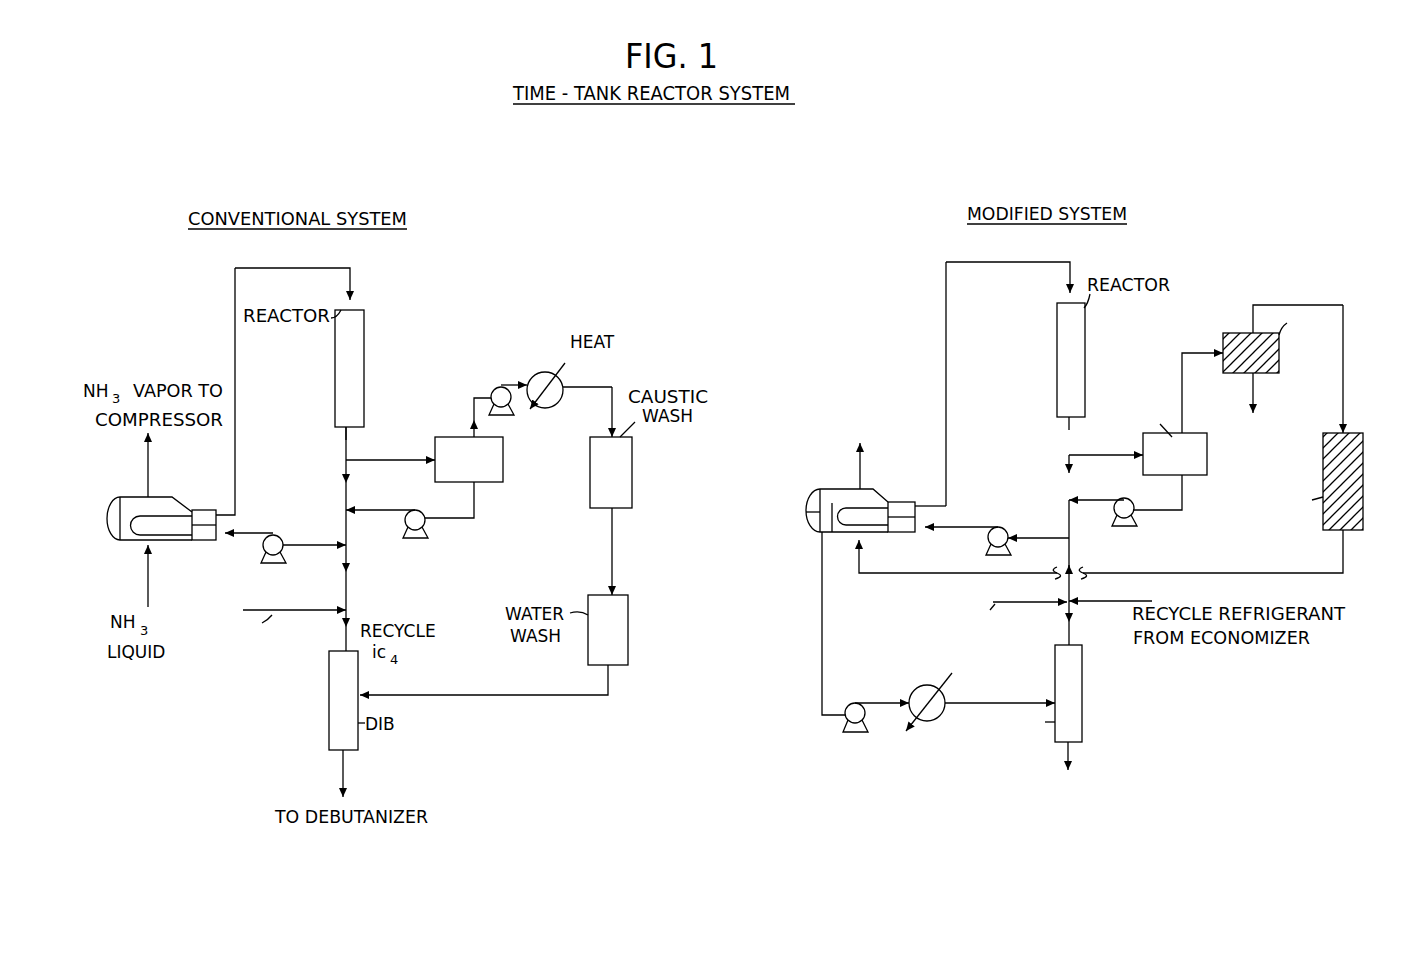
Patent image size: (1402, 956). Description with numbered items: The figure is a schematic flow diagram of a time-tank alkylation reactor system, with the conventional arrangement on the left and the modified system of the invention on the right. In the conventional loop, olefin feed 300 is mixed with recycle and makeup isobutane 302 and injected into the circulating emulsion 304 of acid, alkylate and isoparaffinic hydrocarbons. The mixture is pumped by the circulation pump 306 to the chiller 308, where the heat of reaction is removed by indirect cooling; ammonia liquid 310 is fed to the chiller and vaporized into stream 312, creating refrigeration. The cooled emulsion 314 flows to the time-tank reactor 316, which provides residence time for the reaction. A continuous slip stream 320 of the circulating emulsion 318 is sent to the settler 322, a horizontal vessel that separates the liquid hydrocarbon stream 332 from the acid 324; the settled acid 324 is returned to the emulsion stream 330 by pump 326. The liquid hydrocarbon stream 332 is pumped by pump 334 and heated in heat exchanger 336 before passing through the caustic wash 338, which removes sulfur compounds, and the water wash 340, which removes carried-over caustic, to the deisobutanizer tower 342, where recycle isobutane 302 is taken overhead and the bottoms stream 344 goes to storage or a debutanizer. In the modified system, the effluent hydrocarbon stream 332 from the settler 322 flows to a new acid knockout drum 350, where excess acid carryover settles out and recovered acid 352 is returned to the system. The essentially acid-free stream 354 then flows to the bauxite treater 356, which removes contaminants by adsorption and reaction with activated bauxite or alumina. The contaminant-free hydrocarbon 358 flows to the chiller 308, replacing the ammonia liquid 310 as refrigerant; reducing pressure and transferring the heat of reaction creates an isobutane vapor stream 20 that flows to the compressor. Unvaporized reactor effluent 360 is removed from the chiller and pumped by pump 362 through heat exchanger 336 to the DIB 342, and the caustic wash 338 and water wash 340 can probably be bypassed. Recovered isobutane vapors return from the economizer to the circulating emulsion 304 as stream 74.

The isobutane vapor stream 20 is at (862, 472).
The stream 74 is at (1085, 600).
The olefin feed 300 is at (312, 613).
The recycle and makeup isobutane 302 is at (334, 651).
The circulating emulsion 304 is at (342, 525).
The circulation pump 306 is at (271, 563).
The chiller 308 is at (107, 515).
The ammonia liquid 310 is at (148, 585).
The refrigerant vapor stream 312 is at (148, 468).
The cooled emulsion 314 is at (235, 420).
The time-tank reactor 316 is at (364, 337).
The circulating emulsion 318 is at (338, 447).
The slip stream 320 is at (413, 458).
The settler 322 is at (503, 455).
The settled acid 324 is at (450, 518).
The acid return pump 326 is at (413, 538).
The emulsion stream 330 is at (338, 481).
The liquid hydrocarbon stream 332 is at (474, 398).
The pump 334 is at (501, 387).
The heat exchanger 336 is at (545, 372).
The caustic wash 338 is at (632, 490).
The water wash 340 is at (628, 640).
The deisobutanizer (DIB) tower 342 is at (329, 728).
The bottoms stream 344 is at (343, 778).
The acid knockout drum 350 is at (1233, 333).
The recovered acid 352 is at (1257, 398).
The acid-free effluent hydrocarbon stream 354 is at (1343, 360).
The bauxite treater 356 is at (1355, 531).
The contaminant-free hydrocarbon 358 is at (1269, 573).
The unvaporized reactor effluent 360 is at (822, 645).
The pump 362 is at (855, 732).